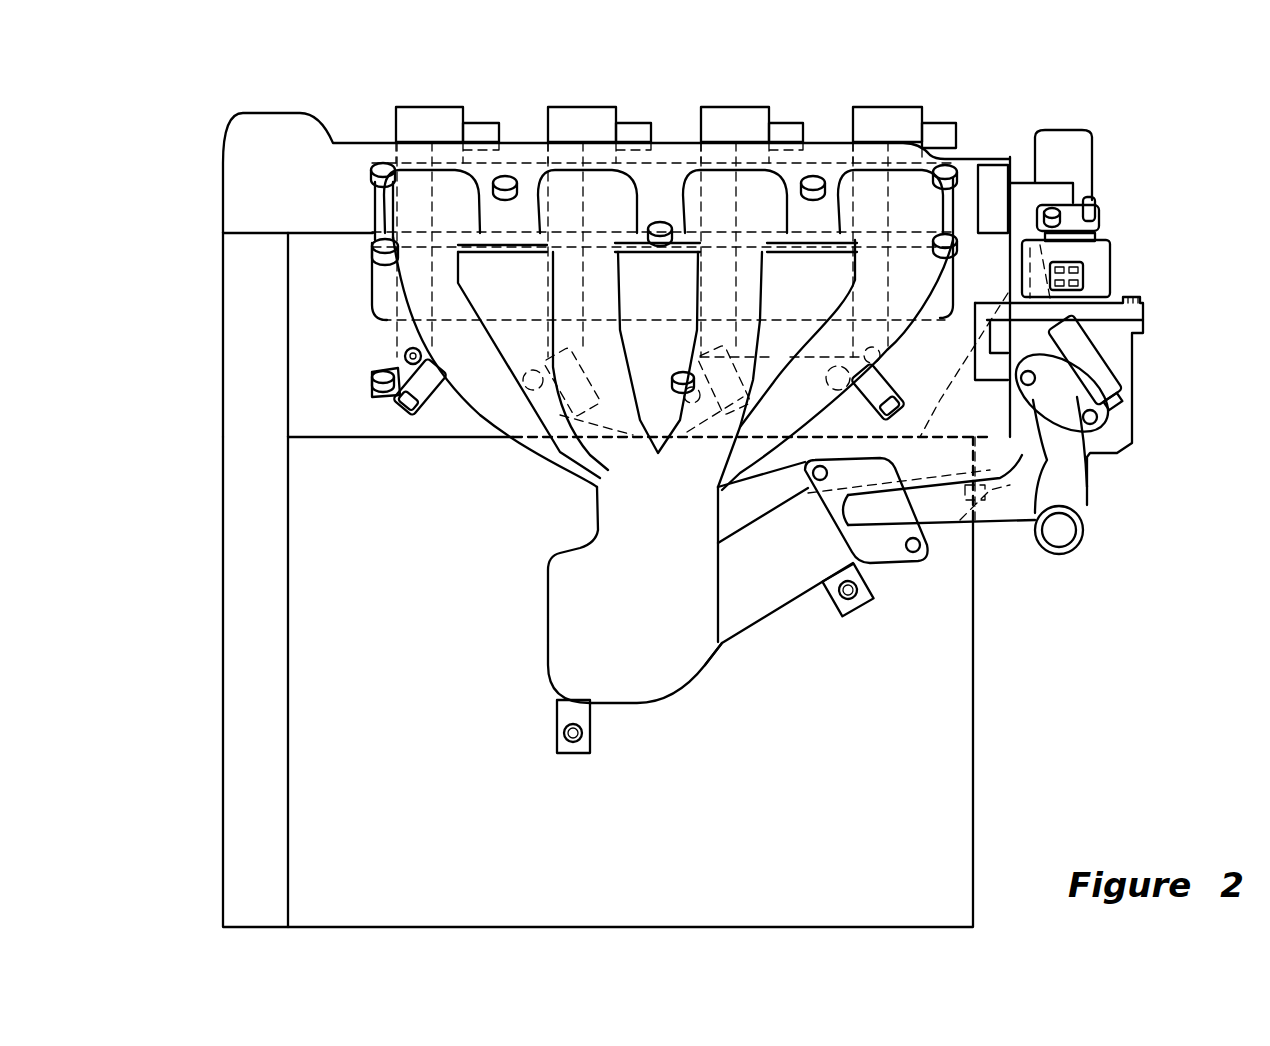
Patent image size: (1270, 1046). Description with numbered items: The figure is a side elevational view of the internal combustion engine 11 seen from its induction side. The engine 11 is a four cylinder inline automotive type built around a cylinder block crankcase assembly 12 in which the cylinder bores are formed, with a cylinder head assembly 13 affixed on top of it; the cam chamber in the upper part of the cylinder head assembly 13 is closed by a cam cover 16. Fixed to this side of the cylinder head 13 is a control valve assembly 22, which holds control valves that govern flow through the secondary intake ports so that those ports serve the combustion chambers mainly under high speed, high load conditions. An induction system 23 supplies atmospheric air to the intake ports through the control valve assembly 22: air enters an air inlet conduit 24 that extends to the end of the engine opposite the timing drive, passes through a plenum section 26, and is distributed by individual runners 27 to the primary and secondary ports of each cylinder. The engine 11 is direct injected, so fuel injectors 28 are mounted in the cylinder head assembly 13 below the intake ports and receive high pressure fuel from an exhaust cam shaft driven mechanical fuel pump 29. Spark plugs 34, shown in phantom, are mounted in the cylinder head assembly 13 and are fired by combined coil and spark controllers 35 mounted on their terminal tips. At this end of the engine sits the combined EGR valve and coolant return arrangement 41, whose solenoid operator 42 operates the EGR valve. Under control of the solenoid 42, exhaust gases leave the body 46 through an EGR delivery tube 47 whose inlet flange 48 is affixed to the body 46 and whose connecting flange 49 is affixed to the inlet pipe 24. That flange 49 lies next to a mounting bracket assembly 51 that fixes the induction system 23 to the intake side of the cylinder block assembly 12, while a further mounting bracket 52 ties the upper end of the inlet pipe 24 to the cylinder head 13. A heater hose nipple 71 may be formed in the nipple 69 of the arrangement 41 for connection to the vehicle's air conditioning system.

The internal combustion engine 11 is at (1132, 128).
The cylinder block crankcase assembly 12 is at (300, 688).
The cylinder head assembly 13 is at (298, 402).
The cam cover 16 is at (240, 198).
The control valve assembly 22 is at (385, 283).
The induction system 23 is at (546, 576).
The air inlet conduit 24 is at (777, 592).
The plenum section 26 is at (683, 668).
The individual runners 27 is at (567, 290).
The fuel injectors 28 is at (397, 400).
The high pressure mechanical fuel pump 29 is at (1095, 183).
The spark plugs 34 is at (397, 357).
The combined coil and spark controllers 35 is at (560, 103).
The combined EGR valve and coolant return arrangement 41 is at (1147, 365).
The solenoid operator 42 is at (1112, 277).
The body 46 is at (1122, 437).
The EGR delivery tube 47 is at (958, 530).
The flange 48 is at (1108, 418).
The connecting flange 49 is at (905, 575).
The mounting bracket assembly 51 is at (850, 613).
The mounting bracket 52 is at (1115, 387).
The nipple 69 is at (1080, 493).
The heater hose nipple 71 is at (1000, 500).